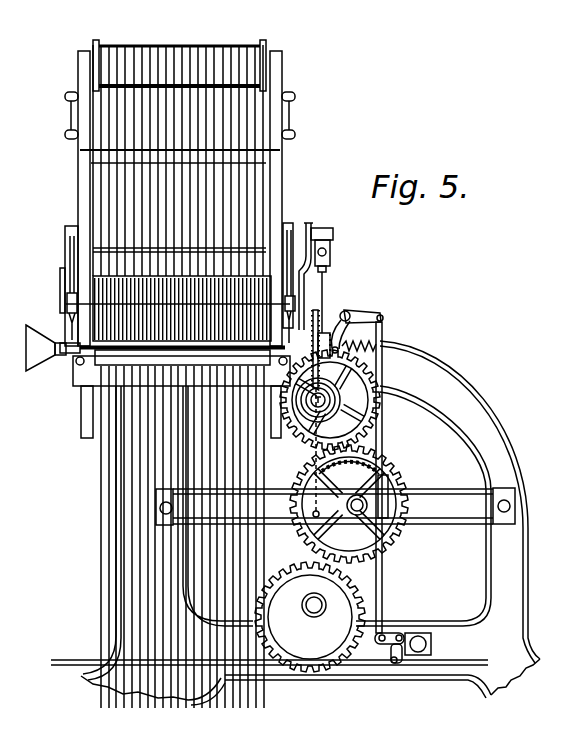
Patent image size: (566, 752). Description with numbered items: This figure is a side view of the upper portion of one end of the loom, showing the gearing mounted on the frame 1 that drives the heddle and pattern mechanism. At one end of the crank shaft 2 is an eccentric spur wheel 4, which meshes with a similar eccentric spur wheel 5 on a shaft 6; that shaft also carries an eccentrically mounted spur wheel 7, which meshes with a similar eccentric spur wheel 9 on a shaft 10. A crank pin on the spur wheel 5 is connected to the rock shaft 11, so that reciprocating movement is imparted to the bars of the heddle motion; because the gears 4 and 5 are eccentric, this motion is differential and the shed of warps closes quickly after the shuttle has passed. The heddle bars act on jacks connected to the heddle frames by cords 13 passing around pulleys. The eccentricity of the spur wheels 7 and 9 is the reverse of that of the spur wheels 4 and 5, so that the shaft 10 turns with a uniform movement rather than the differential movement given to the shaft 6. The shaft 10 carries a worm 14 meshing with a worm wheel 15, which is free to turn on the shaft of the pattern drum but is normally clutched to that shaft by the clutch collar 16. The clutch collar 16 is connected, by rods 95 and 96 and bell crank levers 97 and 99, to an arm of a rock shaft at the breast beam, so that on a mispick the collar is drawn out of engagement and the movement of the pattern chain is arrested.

The frame 1 is at (310, 523).
The crank shaft 2 is at (306, 601).
The eccentric spur wheel 4 is at (287, 566).
The spur wheel 5 is at (393, 529).
The shaft 6 is at (347, 495).
The eccentrically mounted spur wheel 7 is at (393, 457).
The eccentric spur wheel 9 is at (361, 411).
The shaft 10 is at (324, 389).
The rock shaft 11 is at (56, 283).
The cords 13 is at (192, 33).
The worm 14 is at (302, 412).
The worm wheel 15 is at (312, 311).
The clutch collar 16 is at (343, 347).
The rod 95 is at (65, 656).
The rod 96 is at (375, 578).
The bell crank lever 97 is at (386, 626).
The bell crank lever 99 is at (359, 312).